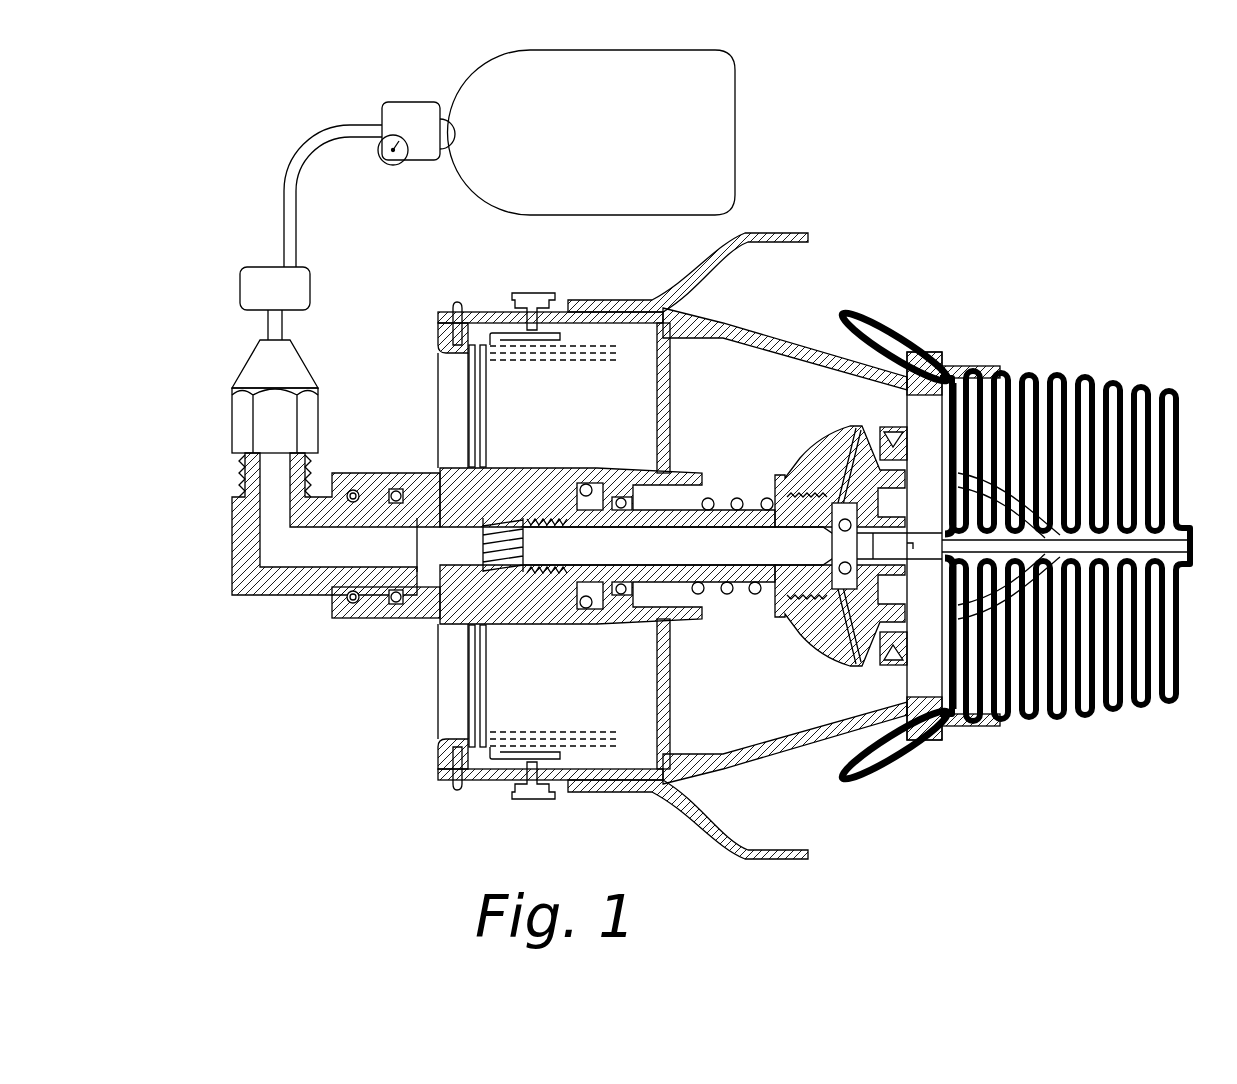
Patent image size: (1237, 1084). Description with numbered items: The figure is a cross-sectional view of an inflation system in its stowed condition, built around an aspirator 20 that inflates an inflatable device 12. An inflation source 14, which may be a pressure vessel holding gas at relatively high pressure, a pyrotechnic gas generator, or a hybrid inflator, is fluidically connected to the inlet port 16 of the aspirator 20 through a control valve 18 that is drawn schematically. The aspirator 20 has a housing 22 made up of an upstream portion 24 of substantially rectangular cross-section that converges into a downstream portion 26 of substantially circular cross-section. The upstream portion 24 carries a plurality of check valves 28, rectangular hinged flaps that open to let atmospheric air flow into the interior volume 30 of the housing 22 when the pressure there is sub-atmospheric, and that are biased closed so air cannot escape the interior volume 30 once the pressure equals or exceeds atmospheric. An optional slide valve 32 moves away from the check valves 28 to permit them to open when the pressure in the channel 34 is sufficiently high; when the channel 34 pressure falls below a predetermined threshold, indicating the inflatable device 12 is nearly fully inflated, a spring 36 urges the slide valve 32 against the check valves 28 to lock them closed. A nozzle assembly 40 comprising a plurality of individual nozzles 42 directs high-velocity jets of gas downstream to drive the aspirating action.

The inflatable device 12 is at (682, 265).
The inflation source 14 is at (722, 131).
The inlet port 16 is at (272, 538).
The control valve 18 is at (248, 277).
The aspirator 20 is at (418, 817).
The housing 22 is at (772, 345).
The upstream portion 24 is at (483, 787).
The downstream portion 26 is at (775, 745).
The check valves 28 is at (483, 438).
The interior volume 30 is at (752, 418).
The slide valve 32 is at (622, 612).
The channel 34 is at (651, 535).
The spring 36 is at (740, 600).
The nozzle assembly 40 is at (838, 450).
The nozzles 42 is at (900, 440).